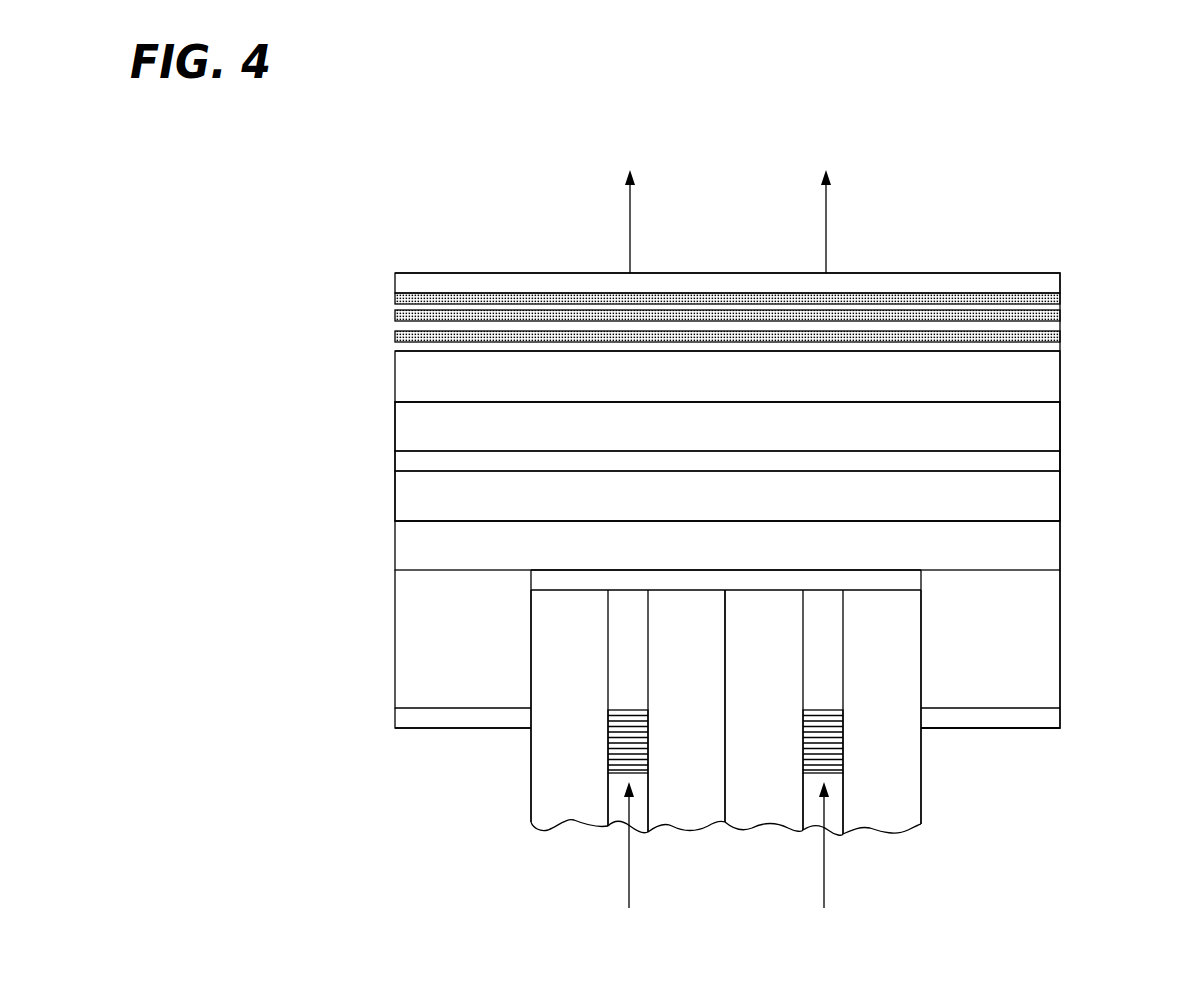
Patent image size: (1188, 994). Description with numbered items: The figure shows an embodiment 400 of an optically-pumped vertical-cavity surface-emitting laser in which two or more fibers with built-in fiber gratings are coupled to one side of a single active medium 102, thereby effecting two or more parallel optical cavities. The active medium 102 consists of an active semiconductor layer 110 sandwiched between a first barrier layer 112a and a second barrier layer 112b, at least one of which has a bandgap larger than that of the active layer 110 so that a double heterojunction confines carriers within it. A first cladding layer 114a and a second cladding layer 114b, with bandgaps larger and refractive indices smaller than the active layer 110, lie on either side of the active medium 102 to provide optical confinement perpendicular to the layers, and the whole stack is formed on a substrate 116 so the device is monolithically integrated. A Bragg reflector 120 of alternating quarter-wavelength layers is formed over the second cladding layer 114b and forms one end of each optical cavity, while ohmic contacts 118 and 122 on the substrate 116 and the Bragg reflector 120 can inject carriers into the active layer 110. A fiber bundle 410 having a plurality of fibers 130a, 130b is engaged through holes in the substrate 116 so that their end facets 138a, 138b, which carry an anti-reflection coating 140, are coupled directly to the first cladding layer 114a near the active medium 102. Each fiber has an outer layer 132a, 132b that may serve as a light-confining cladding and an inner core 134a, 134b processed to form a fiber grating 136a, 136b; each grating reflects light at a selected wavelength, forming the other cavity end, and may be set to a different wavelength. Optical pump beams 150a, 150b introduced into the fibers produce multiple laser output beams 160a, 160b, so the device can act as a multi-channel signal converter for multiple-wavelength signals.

The embodiment 400 is at (272, 201).
The active light-emitting medium 102 is at (395, 402).
The active semiconductor layer 110 is at (1060, 463).
The first barrier layer 112a is at (1060, 485).
The second barrier layer 112b is at (1060, 425).
The first cladding layer 114a is at (1060, 537).
The second cladding layer 114b is at (1060, 383).
The substrate 116 is at (1060, 600).
The ohmic contact 118 is at (440, 730).
The Bragg reflector 120 is at (395, 293).
The ohmic contact 122 is at (953, 277).
The fiber 130a is at (768, 843).
The fiber 130b is at (530, 848).
The outer layer 132a is at (921, 805).
The outer layer 132b is at (528, 805).
The inner core 134a is at (843, 652).
The inner core 134b is at (608, 650).
The fiber grating 136a is at (843, 742).
The fiber grating 136b is at (608, 735).
The end facet 138a is at (780, 594).
The end facet 138b is at (668, 594).
The anti-reflection coating 140 is at (527, 578).
The optical beam 150a is at (826, 862).
The optical beam 150b is at (628, 862).
The laser output beam 160a is at (828, 207).
The laser output beam 160b is at (628, 207).
The fiber bundle 410 is at (1000, 892).